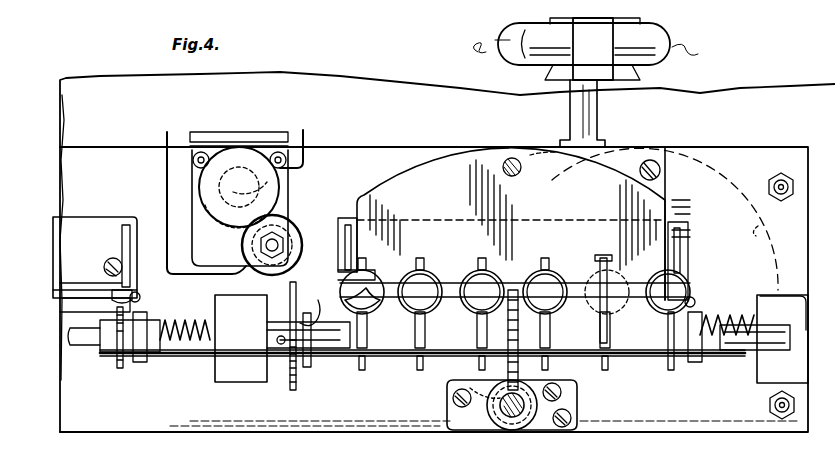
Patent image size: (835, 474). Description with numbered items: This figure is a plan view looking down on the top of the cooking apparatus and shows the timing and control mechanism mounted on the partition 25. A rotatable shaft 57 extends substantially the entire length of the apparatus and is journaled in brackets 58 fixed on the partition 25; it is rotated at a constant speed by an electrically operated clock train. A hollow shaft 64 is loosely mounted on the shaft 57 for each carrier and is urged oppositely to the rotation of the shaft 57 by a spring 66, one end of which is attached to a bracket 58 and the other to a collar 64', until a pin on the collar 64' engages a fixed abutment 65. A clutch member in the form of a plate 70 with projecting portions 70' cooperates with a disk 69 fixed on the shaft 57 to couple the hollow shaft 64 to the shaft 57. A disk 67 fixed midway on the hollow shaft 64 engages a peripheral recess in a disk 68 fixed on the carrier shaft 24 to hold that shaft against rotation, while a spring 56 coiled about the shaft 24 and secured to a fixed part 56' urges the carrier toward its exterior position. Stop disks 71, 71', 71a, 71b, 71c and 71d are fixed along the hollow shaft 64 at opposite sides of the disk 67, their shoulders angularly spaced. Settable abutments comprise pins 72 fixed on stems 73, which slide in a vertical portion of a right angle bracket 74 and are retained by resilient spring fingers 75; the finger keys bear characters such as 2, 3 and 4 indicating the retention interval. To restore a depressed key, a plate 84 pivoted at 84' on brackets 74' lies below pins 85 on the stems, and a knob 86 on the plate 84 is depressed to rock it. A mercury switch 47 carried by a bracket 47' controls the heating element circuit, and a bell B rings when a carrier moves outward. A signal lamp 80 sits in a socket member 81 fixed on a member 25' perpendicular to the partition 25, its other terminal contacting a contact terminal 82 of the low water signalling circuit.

The partition 25 is at (447, 252).
The member 25' is at (240, 185).
The electric lamp 80 is at (237, 175).
The socket member 81 is at (291, 190).
The contact terminal 82 is at (241, 232).
The right angle bracket 74 is at (423, 223).
The brackets 74' is at (442, 263).
The stems 73 is at (105, 268).
The fixed abutment 65 is at (138, 294).
The resilient spring fingers 75 is at (86, 312).
The rotatable shaft 57 is at (72, 345).
The hollow shaft 64 is at (414, 358).
The collar 64' is at (434, 341).
The stop disk 71d is at (121, 370).
The spring 66 is at (192, 350).
The brackets 58 is at (242, 382).
The disk 69 is at (297, 385).
The plate 70 is at (306, 350).
The projecting portions 70' is at (311, 300).
The pins 72 is at (376, 285).
The finger key character 2 is at (376, 288).
The finger key character 3 is at (482, 286).
The finger key character 4 is at (620, 288).
The pins 85 is at (418, 262).
The stop disk 71 is at (361, 362).
The stop disk 71' is at (419, 355).
The stop disk 71a is at (480, 366).
The disk 67 is at (518, 352).
The stop disk 71b is at (550, 366).
The stop disk 71c is at (608, 368).
The spring 56 is at (512, 416).
The fixed part 56' is at (578, 405).
The shaft 24 is at (497, 420).
The disk 68 is at (497, 398).
The plate 84 is at (523, 224).
The knob 86 is at (505, 175).
The pivot support 84' is at (527, 243).
The bell B is at (768, 226).
The mercury switch 47 is at (590, 49).
The bracket 47' is at (610, 106).